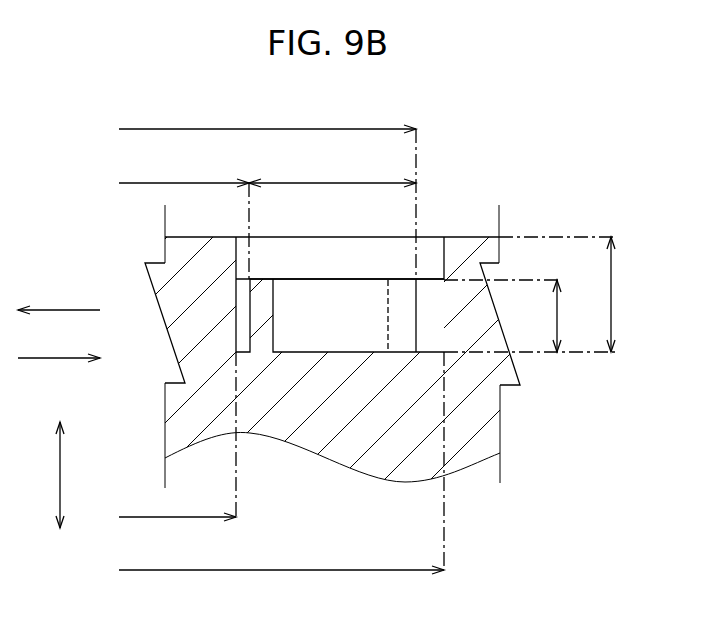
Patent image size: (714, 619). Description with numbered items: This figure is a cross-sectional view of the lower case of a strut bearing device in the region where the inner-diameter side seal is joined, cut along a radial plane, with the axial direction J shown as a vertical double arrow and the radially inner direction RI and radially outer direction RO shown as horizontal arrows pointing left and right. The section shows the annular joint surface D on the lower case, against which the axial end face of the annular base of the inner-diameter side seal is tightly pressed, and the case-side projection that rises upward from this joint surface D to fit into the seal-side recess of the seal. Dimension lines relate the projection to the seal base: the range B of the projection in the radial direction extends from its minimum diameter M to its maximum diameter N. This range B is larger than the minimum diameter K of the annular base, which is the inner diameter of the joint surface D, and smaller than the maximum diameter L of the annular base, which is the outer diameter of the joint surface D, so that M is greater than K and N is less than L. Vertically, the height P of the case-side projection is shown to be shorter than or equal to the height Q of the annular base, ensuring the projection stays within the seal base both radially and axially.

The maximum diameter of the case-side projection N is at (267, 116).
The minimum diameter of the case-side projection M is at (184, 170).
The range of the case-side projection in the radial direction B is at (332, 170).
The annular joint surface D is at (347, 352).
The minimum diameter of the annular base K is at (177, 505).
The maximum diameter of the annular base L is at (281, 555).
The height of the annular base Q is at (623, 294).
The height of the case-side projection P is at (564, 316).
The axial direction J is at (51, 475).
The radially inner direction RI is at (59, 298).
The radially outer direction RO is at (59, 345).